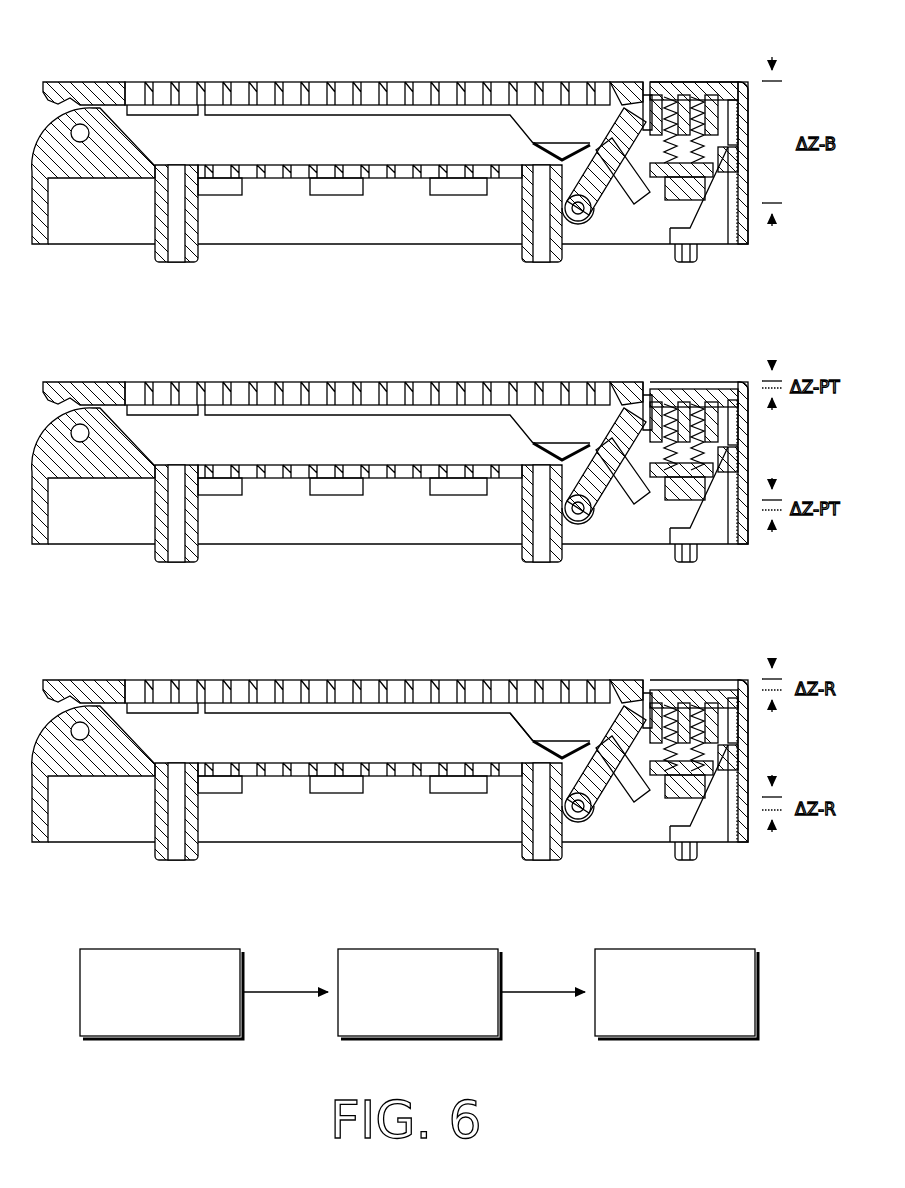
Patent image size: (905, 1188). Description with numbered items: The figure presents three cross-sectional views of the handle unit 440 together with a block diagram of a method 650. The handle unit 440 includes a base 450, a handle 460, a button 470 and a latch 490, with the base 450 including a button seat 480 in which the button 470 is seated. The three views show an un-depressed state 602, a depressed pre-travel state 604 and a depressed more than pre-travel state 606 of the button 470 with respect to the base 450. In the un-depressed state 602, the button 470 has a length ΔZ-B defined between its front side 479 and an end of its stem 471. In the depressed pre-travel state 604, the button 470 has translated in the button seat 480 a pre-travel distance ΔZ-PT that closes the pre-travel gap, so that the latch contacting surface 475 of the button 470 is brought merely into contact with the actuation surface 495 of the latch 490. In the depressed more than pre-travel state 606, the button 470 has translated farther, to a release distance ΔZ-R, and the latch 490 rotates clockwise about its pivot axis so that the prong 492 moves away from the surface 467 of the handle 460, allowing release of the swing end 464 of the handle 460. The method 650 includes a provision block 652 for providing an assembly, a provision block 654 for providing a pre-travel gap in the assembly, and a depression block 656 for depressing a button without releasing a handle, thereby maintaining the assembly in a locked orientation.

The handle unit 440 is at (142, 70).
The handle 460 is at (355, 82).
The swing end 464 is at (642, 85).
The surface 467 is at (538, 143).
The button 470 is at (708, 72).
The stem 471 is at (675, 200).
The latch contacting surface 475 is at (598, 134).
The front side 479 is at (690, 82).
The button seat 480 is at (705, 240).
The latch 490 is at (614, 188).
The prong 492 is at (590, 735).
The actuation surface 495 is at (640, 165).
The base 450 is at (752, 244).
The un-depressed state 602 is at (208, 42).
The depressed pre-travel state 604 is at (282, 337).
The depressed more than pre-travel state 606 is at (376, 629).
The method 650 is at (100, 940).
The provision block 652 is at (200, 949).
The provision block 654 is at (458, 949).
The depression block 656 is at (715, 949).